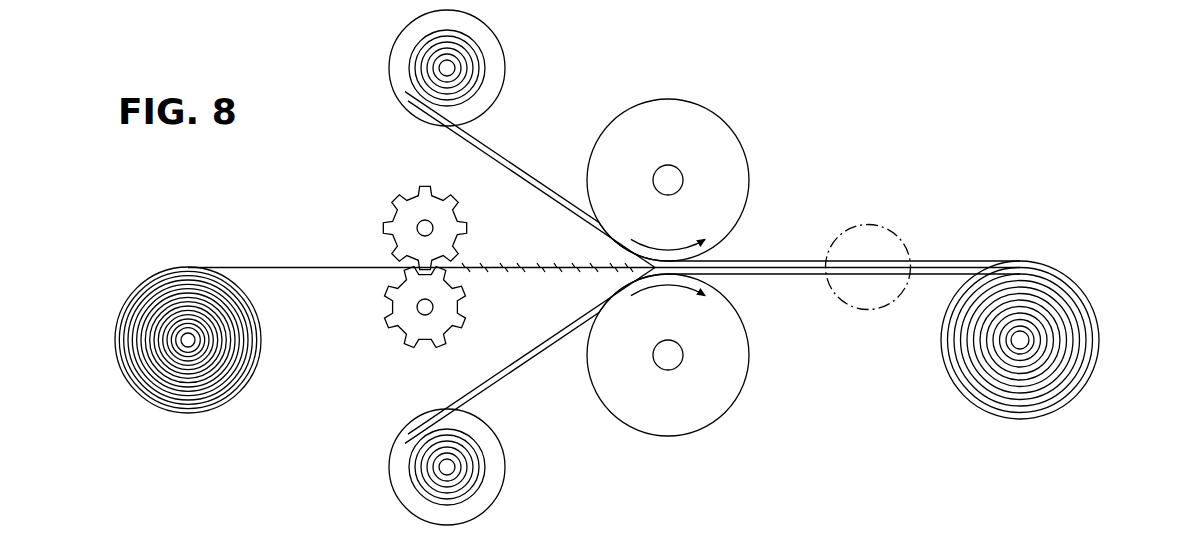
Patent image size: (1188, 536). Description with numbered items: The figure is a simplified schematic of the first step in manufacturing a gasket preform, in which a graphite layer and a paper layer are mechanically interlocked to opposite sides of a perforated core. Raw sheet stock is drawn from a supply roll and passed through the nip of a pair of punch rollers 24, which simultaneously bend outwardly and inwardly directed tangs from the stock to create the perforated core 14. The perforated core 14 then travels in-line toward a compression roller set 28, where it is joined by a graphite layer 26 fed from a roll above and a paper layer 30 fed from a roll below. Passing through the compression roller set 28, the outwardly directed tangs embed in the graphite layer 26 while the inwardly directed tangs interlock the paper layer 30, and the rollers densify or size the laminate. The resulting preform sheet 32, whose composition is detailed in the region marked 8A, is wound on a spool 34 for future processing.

The perforated core 14 is at (508, 262).
The punch rollers 24 is at (392, 215).
The graphite layer 26 is at (527, 360).
The compression roller set 28 is at (706, 132).
The paper layer 30 is at (517, 172).
The preform sheet 32 is at (955, 259).
The spool 34 is at (1086, 383).
The detail region of FIG. 8A is at (880, 226).